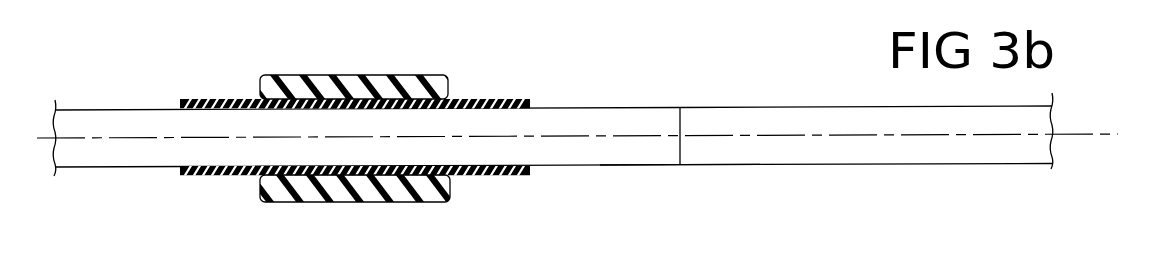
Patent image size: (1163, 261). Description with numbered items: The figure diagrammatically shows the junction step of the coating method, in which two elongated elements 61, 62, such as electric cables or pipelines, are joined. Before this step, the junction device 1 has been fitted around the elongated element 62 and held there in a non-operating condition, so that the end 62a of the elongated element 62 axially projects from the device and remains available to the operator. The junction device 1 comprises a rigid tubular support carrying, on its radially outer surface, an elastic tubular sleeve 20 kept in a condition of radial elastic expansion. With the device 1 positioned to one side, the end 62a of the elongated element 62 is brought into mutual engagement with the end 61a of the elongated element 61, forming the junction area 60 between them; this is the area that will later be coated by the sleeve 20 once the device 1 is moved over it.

The junction device 1 is at (366, 70).
The elastic tubular sleeve 20 is at (260, 98).
The junction area 60 is at (683, 98).
The elongated element 61 is at (782, 98).
The end of elongated element 61a is at (742, 152).
The elongated element 62 is at (607, 100).
The end of elongated element 62a is at (645, 153).